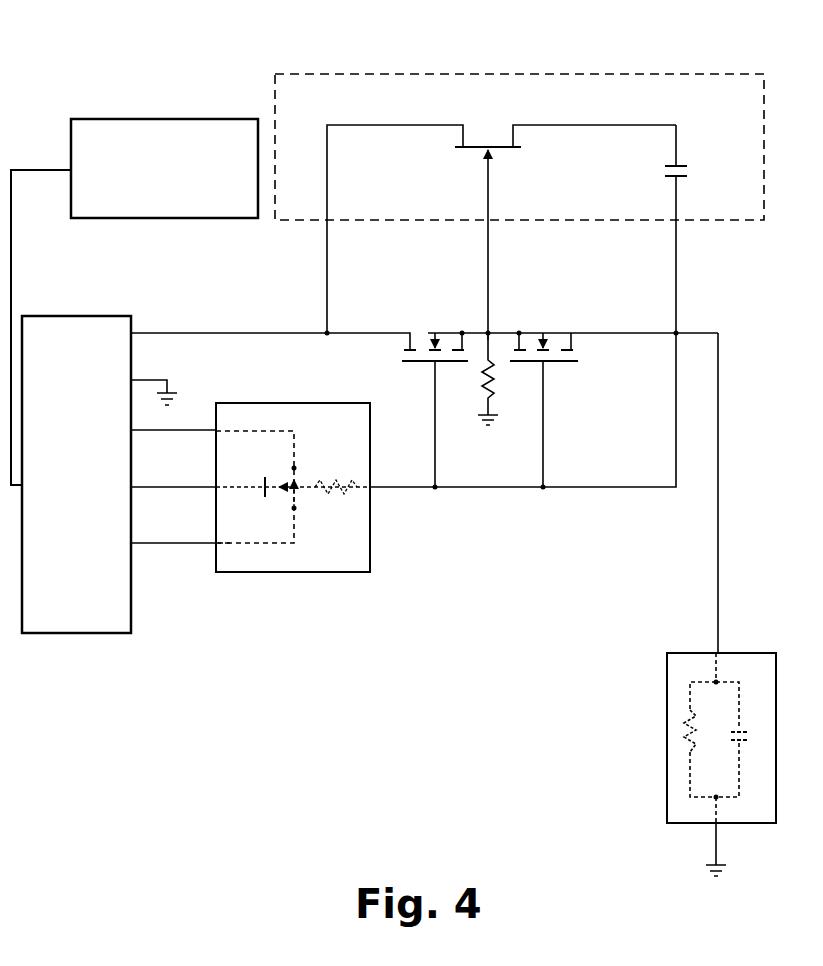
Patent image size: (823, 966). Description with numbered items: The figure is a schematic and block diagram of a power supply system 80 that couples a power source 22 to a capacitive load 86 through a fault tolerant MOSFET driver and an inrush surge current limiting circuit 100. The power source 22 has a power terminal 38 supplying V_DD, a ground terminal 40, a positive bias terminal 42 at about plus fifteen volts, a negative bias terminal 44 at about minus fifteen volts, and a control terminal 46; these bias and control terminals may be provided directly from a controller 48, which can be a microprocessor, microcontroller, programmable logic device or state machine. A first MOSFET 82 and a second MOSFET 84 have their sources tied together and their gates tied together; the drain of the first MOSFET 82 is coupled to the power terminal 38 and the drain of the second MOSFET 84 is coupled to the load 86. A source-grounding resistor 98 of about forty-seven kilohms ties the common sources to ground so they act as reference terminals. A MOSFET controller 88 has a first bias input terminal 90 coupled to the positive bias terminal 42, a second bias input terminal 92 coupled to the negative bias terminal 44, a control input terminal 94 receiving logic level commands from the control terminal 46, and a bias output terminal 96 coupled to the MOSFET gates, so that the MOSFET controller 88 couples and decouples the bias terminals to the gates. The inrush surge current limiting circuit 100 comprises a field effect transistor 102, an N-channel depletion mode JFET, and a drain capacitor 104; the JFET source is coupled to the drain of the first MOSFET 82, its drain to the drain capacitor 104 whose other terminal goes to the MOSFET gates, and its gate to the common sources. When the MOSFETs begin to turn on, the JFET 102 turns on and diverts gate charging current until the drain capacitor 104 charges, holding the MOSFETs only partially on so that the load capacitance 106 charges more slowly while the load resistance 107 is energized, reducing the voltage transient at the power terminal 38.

The power source 22 is at (68, 638).
The power terminal 38 is at (134, 332).
The ground terminal 40 is at (134, 379).
The positive bias terminal 42 is at (134, 429).
The negative bias terminal 44 is at (134, 542).
The control terminal 46 is at (134, 486).
The controller 48 is at (160, 119).
The power supply system 80 is at (250, 95).
The first MOSFET 82 is at (423, 340).
The second MOSFET 84 is at (552, 340).
The load 86 is at (680, 653).
The MOSFET controller 88 is at (296, 403).
The first bias input terminal 90 is at (216, 431).
The second bias input terminal 92 is at (216, 546).
The control input terminal 94 is at (214, 488).
The bias output terminal 96 is at (372, 490).
The source-grounding resistor 98 is at (484, 372).
The inrush surge current limiting circuit 100 is at (605, 70).
The field effect transistor 102 is at (476, 146).
The drain capacitor 104 is at (682, 166).
The load capacitance 106 is at (742, 735).
The load resistance 107 is at (688, 725).